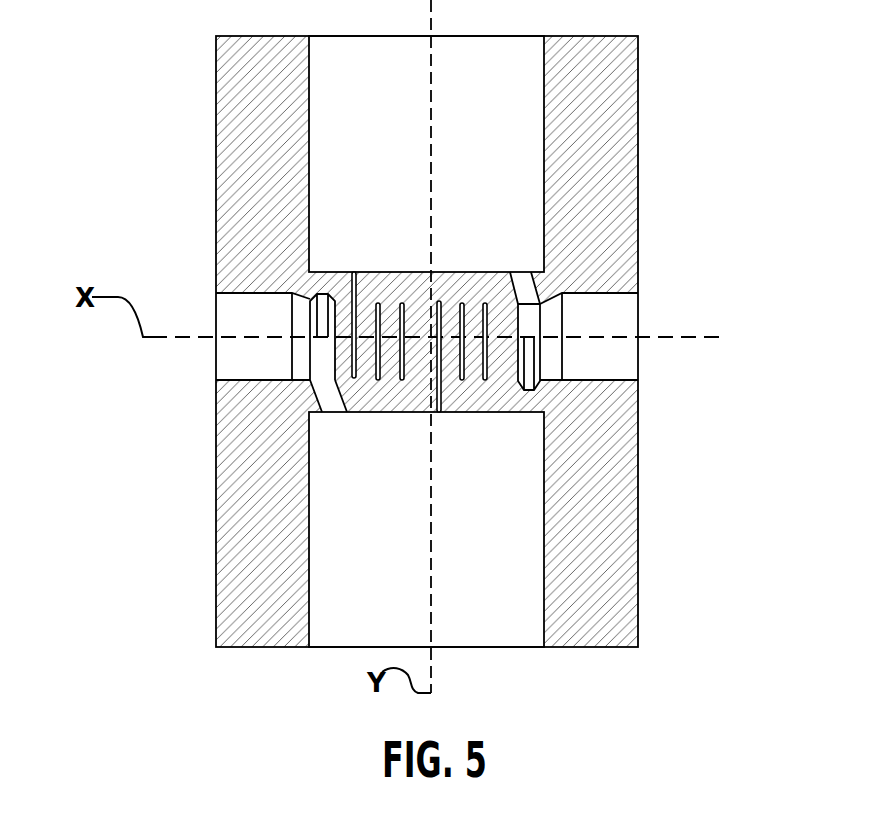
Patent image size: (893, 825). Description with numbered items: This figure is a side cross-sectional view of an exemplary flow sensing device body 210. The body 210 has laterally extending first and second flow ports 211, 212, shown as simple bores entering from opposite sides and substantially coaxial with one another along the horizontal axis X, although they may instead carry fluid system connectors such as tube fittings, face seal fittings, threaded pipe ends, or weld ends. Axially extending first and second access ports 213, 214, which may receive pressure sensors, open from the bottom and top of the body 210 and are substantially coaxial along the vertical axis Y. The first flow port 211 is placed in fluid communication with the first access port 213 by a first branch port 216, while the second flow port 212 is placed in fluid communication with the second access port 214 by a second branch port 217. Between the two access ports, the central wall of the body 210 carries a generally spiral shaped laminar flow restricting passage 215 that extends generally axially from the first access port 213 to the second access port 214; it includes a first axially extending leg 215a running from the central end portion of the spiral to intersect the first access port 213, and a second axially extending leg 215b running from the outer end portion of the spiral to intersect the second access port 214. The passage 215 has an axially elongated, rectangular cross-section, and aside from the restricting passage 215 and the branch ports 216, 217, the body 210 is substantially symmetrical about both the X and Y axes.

The body 210 is at (145, 149).
The first flow port 211 is at (247, 294).
The second flow port 212 is at (604, 294).
The first access port 213 is at (309, 467).
The second access port 214 is at (544, 152).
The restricting passage 215 is at (465, 357).
The first axially extending leg 215a is at (442, 404).
The second axially extending leg 215b is at (353, 276).
The first branch port 216 is at (343, 397).
The second branch port 217 is at (512, 297).